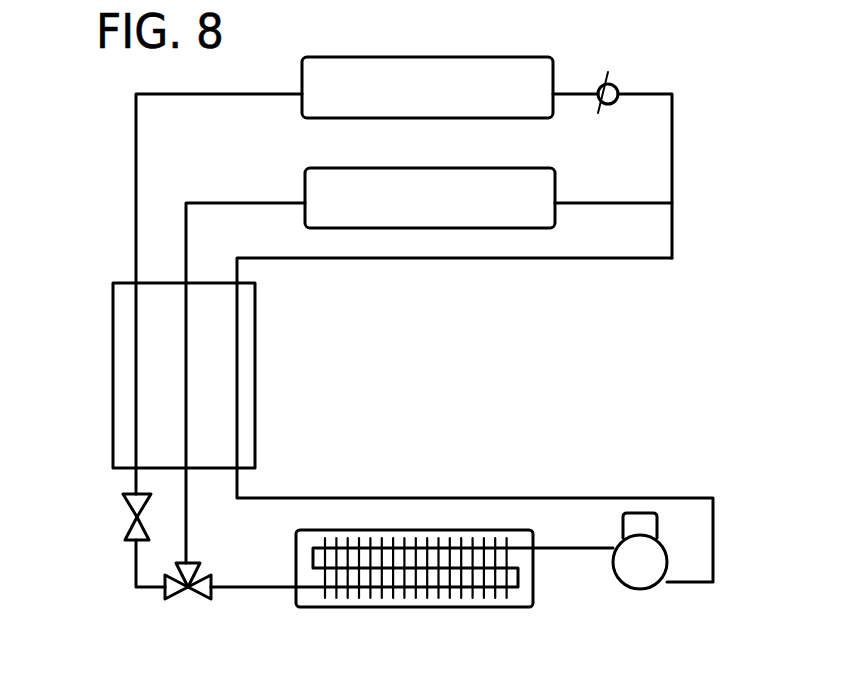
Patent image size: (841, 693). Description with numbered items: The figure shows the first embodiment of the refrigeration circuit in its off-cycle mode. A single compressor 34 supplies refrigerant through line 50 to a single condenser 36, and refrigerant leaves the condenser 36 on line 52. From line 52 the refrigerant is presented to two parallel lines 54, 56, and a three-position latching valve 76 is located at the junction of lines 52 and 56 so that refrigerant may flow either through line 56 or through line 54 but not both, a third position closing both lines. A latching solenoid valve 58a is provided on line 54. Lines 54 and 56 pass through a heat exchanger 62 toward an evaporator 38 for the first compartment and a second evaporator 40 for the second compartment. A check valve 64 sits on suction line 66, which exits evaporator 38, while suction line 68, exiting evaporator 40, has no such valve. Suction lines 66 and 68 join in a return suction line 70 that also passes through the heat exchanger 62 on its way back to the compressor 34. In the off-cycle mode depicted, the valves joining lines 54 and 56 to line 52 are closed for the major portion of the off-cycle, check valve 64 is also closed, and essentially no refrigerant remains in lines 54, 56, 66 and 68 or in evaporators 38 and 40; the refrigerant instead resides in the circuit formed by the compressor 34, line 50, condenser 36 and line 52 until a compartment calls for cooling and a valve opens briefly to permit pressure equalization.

The compressor 34 is at (648, 590).
The condenser 36 is at (472, 608).
The evaporator 38 is at (507, 58).
The second evaporator 40 is at (487, 177).
The line 50 is at (578, 550).
The line 52 is at (230, 587).
The line 54 is at (135, 216).
The line 56 is at (186, 522).
The latching solenoid valve 58a is at (128, 516).
The heat exchanger 62 is at (113, 370).
The check valve 64 is at (614, 85).
The suction line 66 is at (573, 96).
The suction line 68 is at (607, 205).
The return suction line 70 is at (672, 243).
The three-position latching valve 76 is at (175, 599).